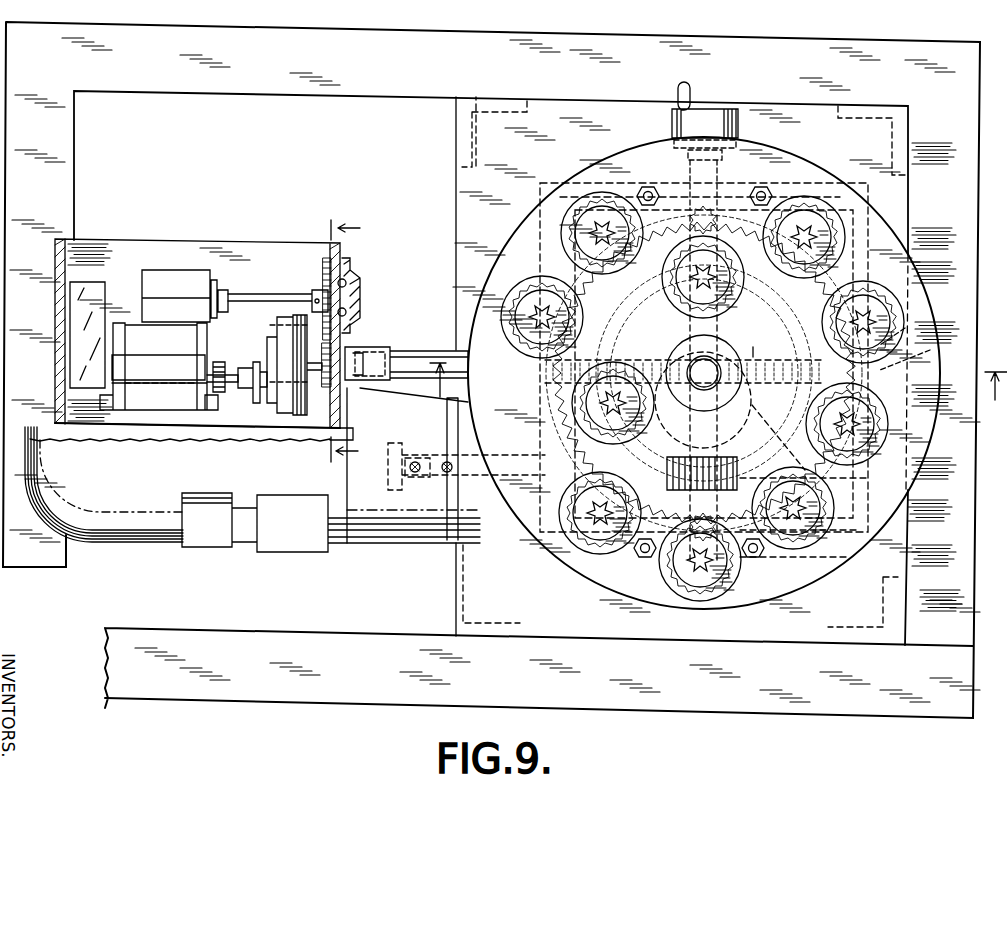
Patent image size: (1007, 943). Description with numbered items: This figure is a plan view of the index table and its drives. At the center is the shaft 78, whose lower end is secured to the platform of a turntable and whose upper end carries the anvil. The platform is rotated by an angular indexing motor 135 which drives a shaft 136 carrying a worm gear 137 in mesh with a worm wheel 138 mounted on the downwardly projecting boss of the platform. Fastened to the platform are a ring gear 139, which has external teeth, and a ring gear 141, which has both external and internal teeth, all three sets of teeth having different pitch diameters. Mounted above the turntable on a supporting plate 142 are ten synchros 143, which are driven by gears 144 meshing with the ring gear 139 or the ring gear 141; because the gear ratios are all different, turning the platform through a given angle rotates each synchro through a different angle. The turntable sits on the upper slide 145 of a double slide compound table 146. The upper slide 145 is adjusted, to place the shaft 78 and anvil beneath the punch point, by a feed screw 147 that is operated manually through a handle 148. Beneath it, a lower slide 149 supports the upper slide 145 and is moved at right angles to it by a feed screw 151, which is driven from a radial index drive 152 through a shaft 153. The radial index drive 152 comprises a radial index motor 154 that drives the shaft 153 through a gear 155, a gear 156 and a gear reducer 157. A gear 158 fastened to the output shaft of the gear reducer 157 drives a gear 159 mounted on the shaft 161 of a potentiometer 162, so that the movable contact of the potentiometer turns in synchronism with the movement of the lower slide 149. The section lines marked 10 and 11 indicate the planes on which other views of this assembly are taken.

The section line 10- 10 is at (712, 381).
The section line 11- 11 is at (332, 343).
The shaft 78 is at (690, 356).
The angular indexing motor 135 is at (147, 535).
The shaft 136 is at (508, 458).
The worm gear 137 is at (737, 470).
The worm wheel 138 is at (650, 495).
The ring gear 139 is at (914, 341).
The ring gear 141 is at (866, 478).
The supporting plate 142 is at (912, 452).
The synchros 143 is at (823, 207).
The gears 144 is at (803, 268).
The upper slide 145 is at (633, 200).
The double slide compound table 146 is at (818, 179).
The feed screw 147 is at (715, 438).
The handle 148 is at (690, 94).
The lower slide 149 is at (550, 240).
The feed screw 151 is at (759, 342).
The radial index drive 152 is at (216, 230).
The shaft 153 is at (418, 350).
The radial index motor 154 is at (160, 404).
The gear 155 is at (230, 362).
The gear 156 is at (221, 392).
The gear reducer 157 is at (280, 323).
The gear 158 is at (340, 380).
The gear 159 is at (323, 265).
The shaft 161 is at (262, 293).
The potentiometer 162 is at (170, 272).